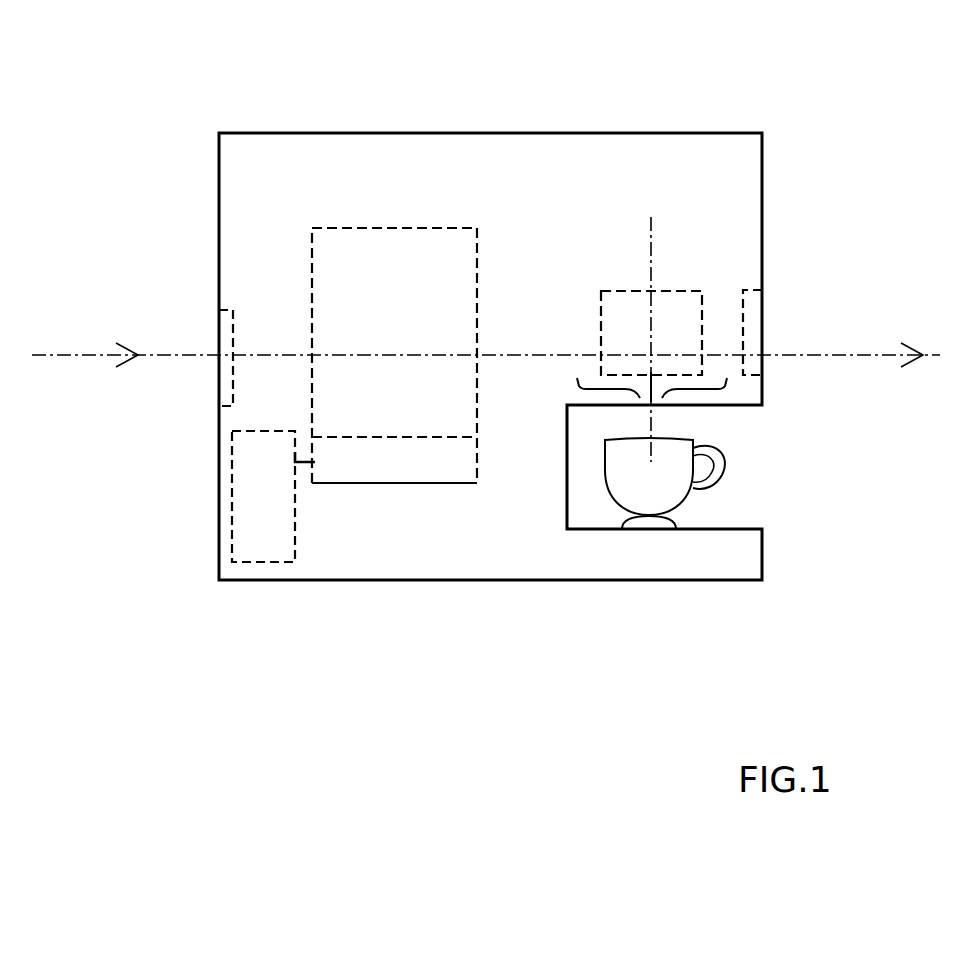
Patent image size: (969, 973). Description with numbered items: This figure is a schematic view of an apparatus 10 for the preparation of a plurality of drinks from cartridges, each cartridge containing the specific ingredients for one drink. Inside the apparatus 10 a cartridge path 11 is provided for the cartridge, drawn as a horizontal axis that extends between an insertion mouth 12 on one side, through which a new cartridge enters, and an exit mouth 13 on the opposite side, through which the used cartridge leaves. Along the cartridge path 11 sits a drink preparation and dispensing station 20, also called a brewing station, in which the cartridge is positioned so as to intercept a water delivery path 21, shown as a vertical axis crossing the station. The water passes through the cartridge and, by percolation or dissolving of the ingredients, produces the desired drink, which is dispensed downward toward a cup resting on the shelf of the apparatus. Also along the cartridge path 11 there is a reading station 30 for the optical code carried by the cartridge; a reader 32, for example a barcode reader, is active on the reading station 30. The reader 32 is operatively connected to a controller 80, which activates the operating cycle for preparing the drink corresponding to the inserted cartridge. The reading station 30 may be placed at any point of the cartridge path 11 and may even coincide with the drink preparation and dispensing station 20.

The apparatus 10 is at (513, 131).
The cartridge path 11 is at (824, 354).
The insertion mouth 12 is at (226, 322).
The exit mouth 13 is at (748, 306).
The drink preparation and dispensing station 20 is at (674, 286).
The water delivery path 21 is at (653, 217).
The reading station 30 is at (377, 226).
The reader 32 is at (372, 486).
The controller 80 is at (226, 463).